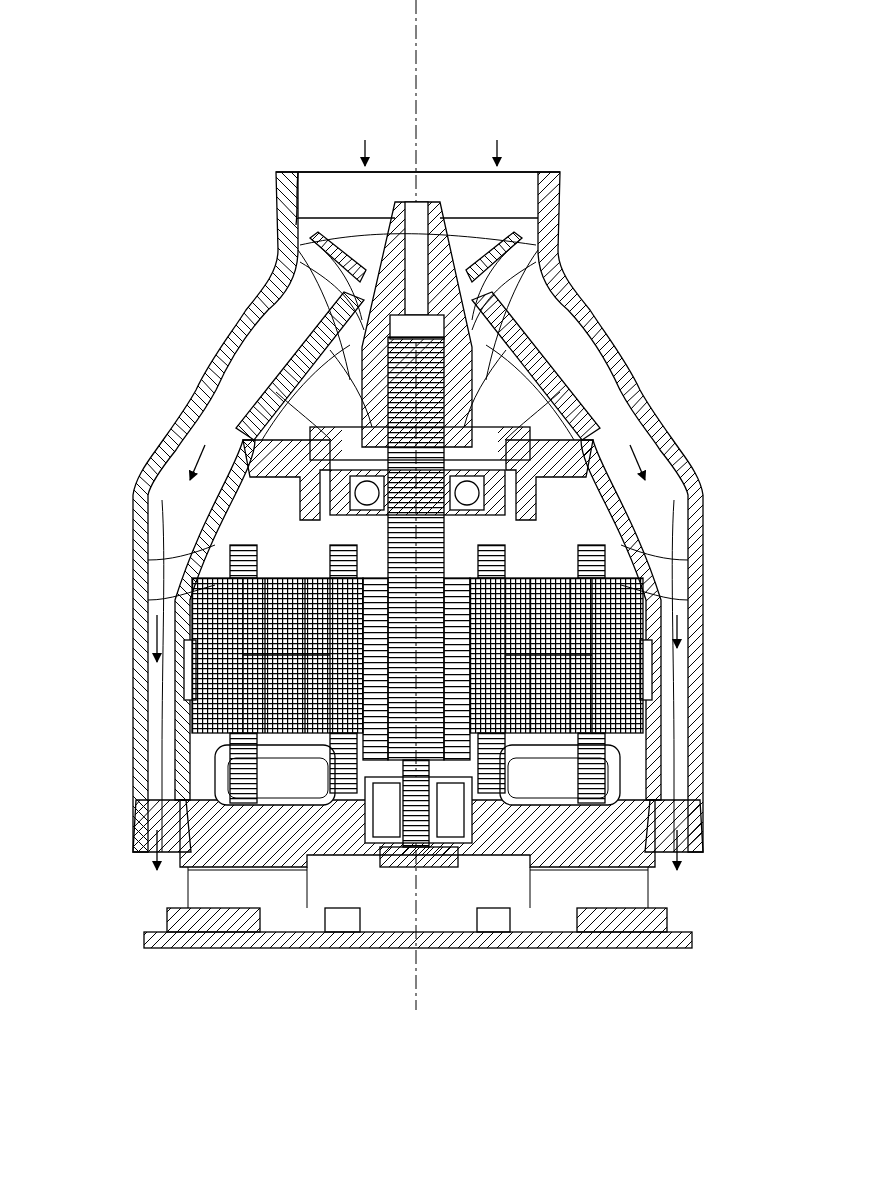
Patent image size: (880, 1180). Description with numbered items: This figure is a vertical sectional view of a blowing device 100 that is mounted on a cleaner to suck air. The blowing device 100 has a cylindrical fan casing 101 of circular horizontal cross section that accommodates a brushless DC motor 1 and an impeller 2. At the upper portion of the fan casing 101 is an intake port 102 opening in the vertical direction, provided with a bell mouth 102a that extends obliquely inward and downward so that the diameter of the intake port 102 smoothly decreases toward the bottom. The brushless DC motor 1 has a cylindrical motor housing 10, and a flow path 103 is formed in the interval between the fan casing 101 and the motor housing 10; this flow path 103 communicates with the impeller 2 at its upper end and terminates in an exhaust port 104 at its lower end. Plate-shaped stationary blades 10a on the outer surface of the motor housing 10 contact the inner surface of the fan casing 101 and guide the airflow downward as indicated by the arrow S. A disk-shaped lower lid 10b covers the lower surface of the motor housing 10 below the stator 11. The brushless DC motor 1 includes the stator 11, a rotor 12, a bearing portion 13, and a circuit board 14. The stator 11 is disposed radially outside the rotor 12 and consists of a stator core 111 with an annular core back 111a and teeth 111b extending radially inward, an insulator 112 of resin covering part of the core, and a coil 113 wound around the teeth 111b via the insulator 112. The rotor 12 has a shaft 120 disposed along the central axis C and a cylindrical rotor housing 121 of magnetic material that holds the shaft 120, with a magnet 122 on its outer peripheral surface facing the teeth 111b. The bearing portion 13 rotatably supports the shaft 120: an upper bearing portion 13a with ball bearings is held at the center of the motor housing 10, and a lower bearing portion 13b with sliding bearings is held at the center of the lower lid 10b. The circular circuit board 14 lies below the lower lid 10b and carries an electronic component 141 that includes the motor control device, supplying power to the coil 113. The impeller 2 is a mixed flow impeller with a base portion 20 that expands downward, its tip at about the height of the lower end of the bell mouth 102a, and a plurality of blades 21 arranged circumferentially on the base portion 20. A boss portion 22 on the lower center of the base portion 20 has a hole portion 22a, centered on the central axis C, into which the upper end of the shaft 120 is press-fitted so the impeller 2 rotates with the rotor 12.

The blowing device 100 is at (641, 73).
The fan casing 101 is at (682, 418).
The intake port 102 is at (455, 171).
The bell mouth 102a is at (297, 205).
The flow path 103 is at (682, 662).
The exhaust port 104 is at (706, 862).
The arrow indicating airflow S is at (686, 622).
The central axis C is at (416, 44).
The impeller 2 is at (435, 323).
The base portion 20 is at (556, 290).
The blades 21 is at (286, 262).
The boss portion 22 is at (522, 370).
The hole portion 22a is at (566, 400).
The brushless DC motor 1 is at (403, 670).
The motor housing 10 is at (413, 722).
The stationary blades 10a is at (178, 510).
The lower lid 10b is at (456, 870).
The stator 11 is at (664, 572).
The rotor 12 is at (642, 520).
The bearing portion 13 is at (292, 694).
The upper bearing portion 13a is at (292, 383).
The lower bearing portion 13b is at (401, 870).
The stator core 111 is at (335, 627).
The core back 111a is at (232, 618).
The teeth 111b is at (240, 650).
The insulator 112 is at (208, 592).
The coil 113 is at (228, 480).
The shaft 120 is at (412, 590).
The rotor housing 121 is at (206, 528).
The magnet 122 is at (586, 672).
The circuit board 14 is at (403, 939).
The electronic component 141 is at (184, 900).